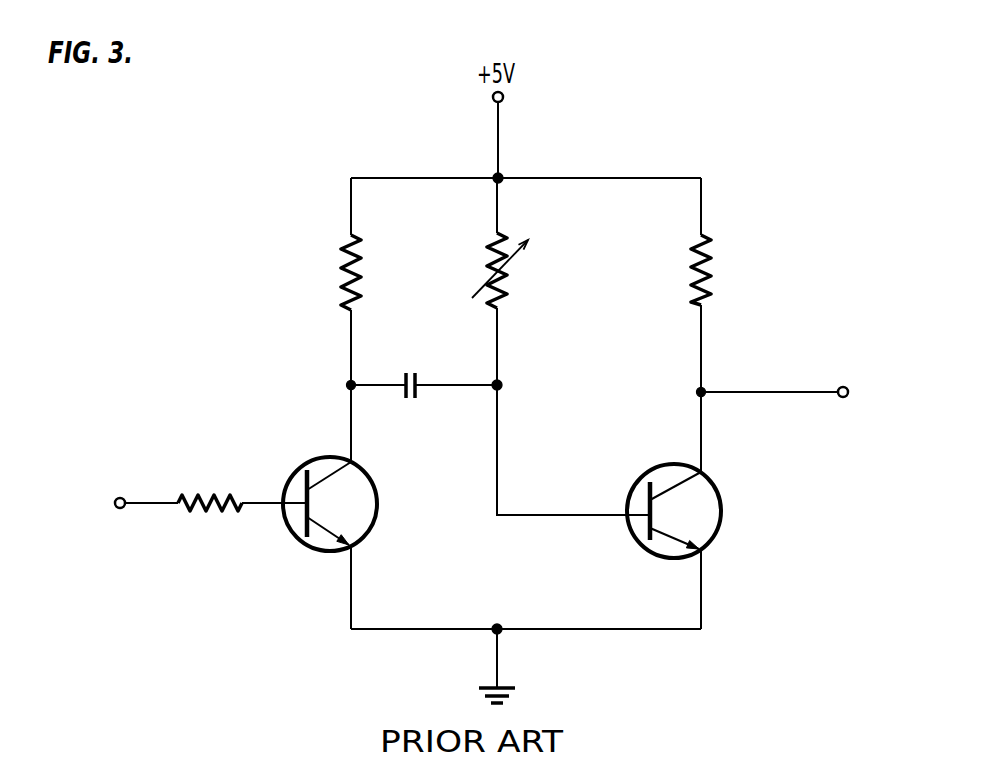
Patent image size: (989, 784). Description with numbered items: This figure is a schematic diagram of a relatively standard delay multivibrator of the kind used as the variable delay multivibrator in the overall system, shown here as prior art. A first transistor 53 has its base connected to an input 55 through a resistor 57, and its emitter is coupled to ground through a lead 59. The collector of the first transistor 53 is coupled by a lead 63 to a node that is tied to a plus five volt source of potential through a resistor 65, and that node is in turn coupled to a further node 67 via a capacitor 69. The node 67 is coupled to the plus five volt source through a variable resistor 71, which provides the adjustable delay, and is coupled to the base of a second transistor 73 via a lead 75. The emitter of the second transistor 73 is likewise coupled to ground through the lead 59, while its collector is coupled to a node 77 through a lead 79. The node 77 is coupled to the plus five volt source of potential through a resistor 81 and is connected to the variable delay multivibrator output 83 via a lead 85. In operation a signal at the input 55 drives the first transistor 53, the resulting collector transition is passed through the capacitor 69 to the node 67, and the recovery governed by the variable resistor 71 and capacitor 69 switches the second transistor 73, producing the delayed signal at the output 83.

The first transistor 53 is at (379, 503).
The input 55 is at (121, 497).
The resistor 57 is at (198, 496).
The lead 59 is at (498, 662).
The lead 63 is at (353, 441).
The resistor 65 is at (343, 271).
The node 67 is at (504, 388).
The capacitor 69 is at (408, 373).
The variable resistor 71 is at (509, 283).
The second transistor 73 is at (723, 509).
The lead 75 is at (498, 450).
The node 77 is at (697, 391).
The lead 79 is at (703, 448).
The resistor 81 is at (712, 285).
The variable delay multivibrator output 83 is at (840, 387).
The lead 85 is at (771, 390).